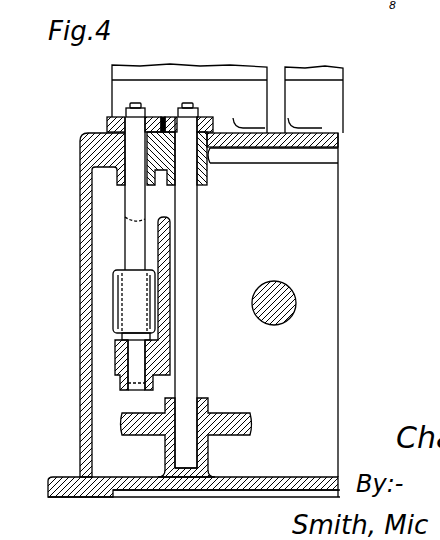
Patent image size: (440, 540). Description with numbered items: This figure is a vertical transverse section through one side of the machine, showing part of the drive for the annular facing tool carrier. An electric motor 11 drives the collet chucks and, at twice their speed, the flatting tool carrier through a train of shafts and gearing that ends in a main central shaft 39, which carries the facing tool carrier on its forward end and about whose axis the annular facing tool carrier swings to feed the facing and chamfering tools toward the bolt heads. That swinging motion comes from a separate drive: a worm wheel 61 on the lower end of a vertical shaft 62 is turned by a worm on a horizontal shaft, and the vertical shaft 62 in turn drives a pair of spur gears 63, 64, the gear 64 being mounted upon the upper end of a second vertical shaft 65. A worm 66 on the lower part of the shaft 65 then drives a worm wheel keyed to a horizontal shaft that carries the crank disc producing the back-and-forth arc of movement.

The electric motor 11 is at (218, 92).
The main central shaft 39 is at (282, 293).
The worm wheel 61 is at (238, 420).
The vertical shaft 62 is at (187, 232).
The spur gear 63 is at (165, 117).
The spur gear 64 is at (108, 116).
The second vertical shaft 65 is at (130, 203).
The worm 66 is at (117, 292).